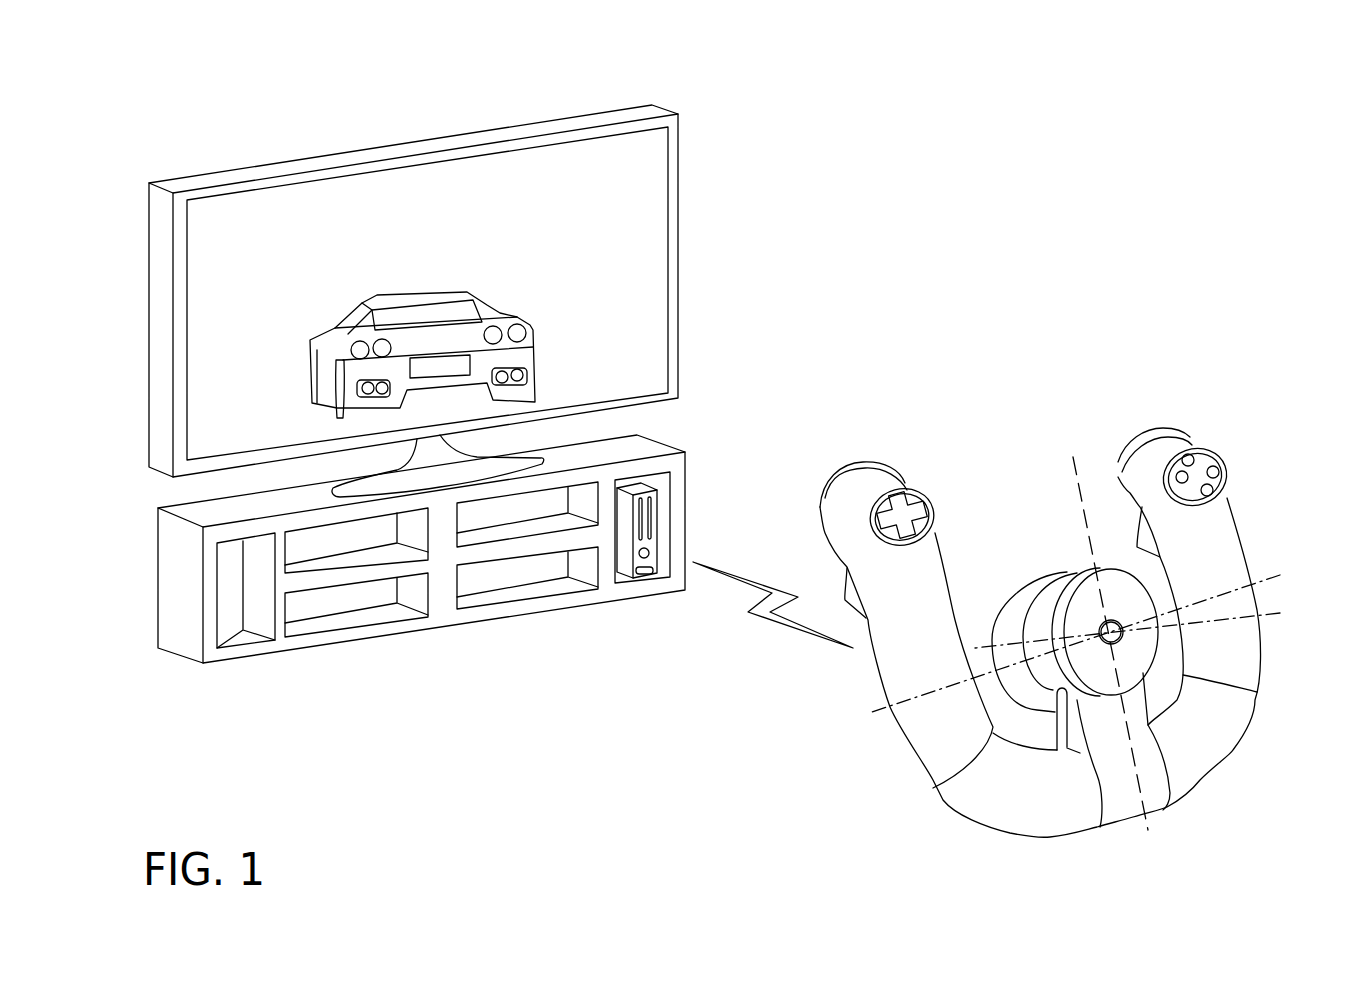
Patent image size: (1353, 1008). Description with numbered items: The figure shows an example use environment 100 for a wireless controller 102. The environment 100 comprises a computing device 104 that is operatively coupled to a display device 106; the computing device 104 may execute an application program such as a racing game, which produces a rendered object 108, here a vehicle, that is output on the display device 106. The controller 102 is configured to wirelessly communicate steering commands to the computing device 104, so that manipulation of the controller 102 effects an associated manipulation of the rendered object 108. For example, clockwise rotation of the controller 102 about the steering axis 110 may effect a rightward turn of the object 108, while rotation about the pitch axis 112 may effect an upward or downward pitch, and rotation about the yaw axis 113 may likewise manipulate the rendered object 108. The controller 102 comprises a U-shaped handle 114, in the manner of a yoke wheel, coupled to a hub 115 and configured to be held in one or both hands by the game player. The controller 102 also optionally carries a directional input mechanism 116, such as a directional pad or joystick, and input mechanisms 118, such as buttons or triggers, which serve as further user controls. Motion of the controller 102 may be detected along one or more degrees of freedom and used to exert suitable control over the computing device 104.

The use environment 100 is at (975, 57).
The wireless controller 102 is at (1125, 392).
The computing device 104 is at (638, 578).
The display device 106 is at (678, 114).
The rendered object 108 is at (528, 320).
The steering axis 110 is at (1280, 614).
The pitch axis 112 is at (1280, 575).
The yaw axis 113 is at (1077, 487).
The U-shaped handle 114 is at (1232, 520).
The hub 115 is at (1077, 573).
The directional input mechanism 116 is at (920, 494).
The input mechanisms 118 is at (1210, 462).